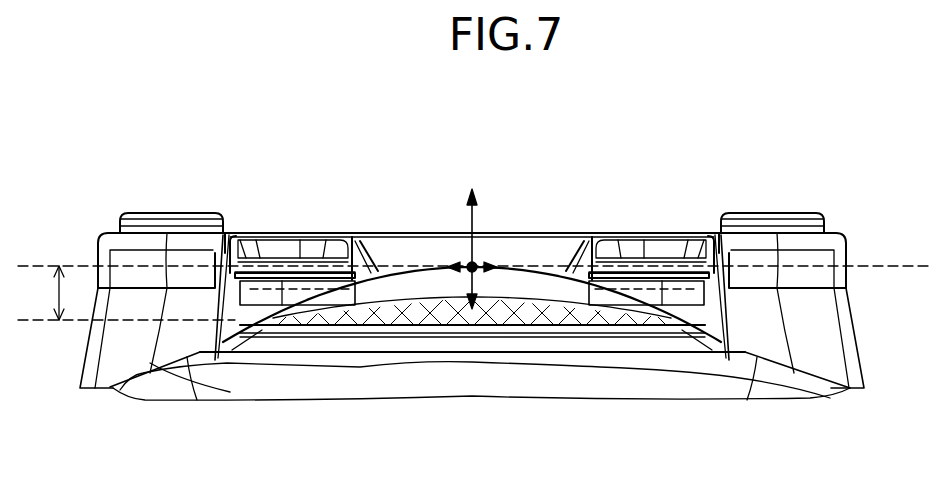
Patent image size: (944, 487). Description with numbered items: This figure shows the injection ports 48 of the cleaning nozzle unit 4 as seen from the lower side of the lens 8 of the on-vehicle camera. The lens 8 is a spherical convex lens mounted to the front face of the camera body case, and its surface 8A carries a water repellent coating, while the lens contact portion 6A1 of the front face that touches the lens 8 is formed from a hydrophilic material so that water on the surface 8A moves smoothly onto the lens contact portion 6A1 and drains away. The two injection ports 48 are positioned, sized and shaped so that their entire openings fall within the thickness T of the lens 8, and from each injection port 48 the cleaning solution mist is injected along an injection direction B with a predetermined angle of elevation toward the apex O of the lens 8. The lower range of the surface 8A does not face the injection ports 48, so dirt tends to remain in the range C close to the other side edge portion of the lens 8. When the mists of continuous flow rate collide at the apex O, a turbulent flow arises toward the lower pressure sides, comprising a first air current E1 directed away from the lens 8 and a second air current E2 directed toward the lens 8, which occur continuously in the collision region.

The cleaning nozzle unit 4 is at (278, 216).
The injection direction B is at (312, 258).
The injection port 48 is at (217, 362).
The lens 8 is at (590, 294).
The surface 8A is at (622, 300).
The range close to the other side edge portion C is at (515, 319).
The lens contact portion 6A1 is at (410, 334).
The apex O is at (476, 263).
The first air current E1 is at (467, 224).
The second air current E2 is at (463, 290).
The thickness T is at (47, 293).